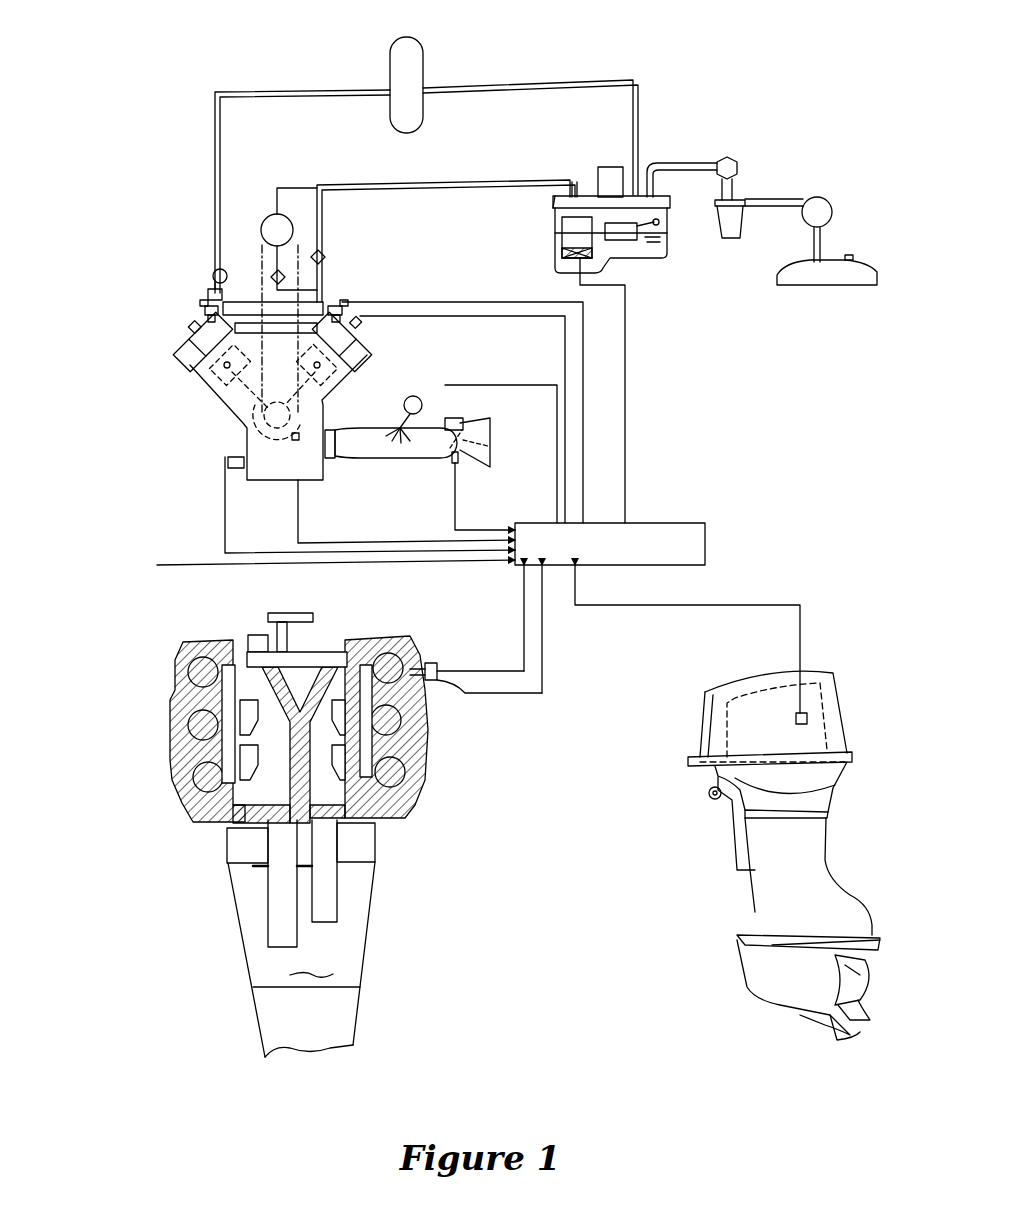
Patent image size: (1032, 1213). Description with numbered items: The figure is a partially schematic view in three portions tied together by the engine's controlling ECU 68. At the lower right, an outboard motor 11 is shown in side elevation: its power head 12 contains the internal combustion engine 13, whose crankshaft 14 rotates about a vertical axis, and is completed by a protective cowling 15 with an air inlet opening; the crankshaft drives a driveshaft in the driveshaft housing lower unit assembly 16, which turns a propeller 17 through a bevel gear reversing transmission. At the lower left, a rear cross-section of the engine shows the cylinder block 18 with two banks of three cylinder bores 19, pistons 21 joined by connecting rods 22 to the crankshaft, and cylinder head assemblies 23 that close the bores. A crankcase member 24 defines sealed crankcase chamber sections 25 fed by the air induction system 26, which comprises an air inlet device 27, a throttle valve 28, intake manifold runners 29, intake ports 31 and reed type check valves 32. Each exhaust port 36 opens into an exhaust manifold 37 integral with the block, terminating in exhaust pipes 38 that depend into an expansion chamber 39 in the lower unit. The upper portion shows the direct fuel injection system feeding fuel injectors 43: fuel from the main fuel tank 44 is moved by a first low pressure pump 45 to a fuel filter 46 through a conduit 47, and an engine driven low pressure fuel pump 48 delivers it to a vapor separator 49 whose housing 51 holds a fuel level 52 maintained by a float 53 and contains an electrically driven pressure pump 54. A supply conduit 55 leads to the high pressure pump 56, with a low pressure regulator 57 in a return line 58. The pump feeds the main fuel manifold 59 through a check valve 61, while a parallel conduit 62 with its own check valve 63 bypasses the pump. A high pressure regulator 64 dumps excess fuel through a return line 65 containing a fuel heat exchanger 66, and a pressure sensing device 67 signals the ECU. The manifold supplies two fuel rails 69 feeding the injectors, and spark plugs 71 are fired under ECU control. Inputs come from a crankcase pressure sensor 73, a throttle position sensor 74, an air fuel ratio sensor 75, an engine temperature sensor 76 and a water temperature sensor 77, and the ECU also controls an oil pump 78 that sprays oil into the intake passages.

The outboard motor 11 is at (860, 685).
The power head 12 is at (850, 750).
The internal combustion engine 13 is at (128, 405).
The crankshaft 14 is at (243, 440).
The protective cowling 15 is at (715, 695).
The driveshaft housing lower unit assembly 16 is at (367, 933).
The propeller 17 is at (862, 1005).
The cylinder block 18 is at (338, 390).
The cylinder bores 19 is at (202, 383).
The pistons 21 is at (187, 370).
The connecting rods 22 is at (227, 403).
The cylinder head assemblies 23 is at (193, 340).
The crankcase member 24 is at (272, 482).
The crankcase chamber sections 25 is at (265, 460).
The air induction system 26 is at (445, 410).
The air inlet device 27 is at (466, 424).
The throttle valve 28 is at (490, 460).
The intake manifold runners 29 is at (402, 458).
The intake ports 31 is at (328, 462).
The reed type check valves 32 is at (342, 462).
The exhaust port 36 is at (245, 817).
The exhaust manifolds 37 is at (278, 820).
The exhaust pipes 38 is at (320, 870).
The expansion chamber 39 is at (311, 963).
The fuel injectors 43 is at (200, 312).
The main fuel tank 44 is at (808, 278).
The first low pressure pump 45 is at (828, 202).
The fuel filter 46 is at (732, 238).
The conduit 47 is at (738, 160).
The low pressure fuel pump 48 is at (770, 198).
The vapor separator 49 is at (652, 158).
The vapor separator housing 51 is at (548, 213).
The fuel level 52 is at (640, 258).
The float 53 is at (630, 228).
The electrically driven pressure pump 54 is at (573, 223).
The supply conduit 55 is at (370, 183).
The high pressure pump 56 is at (268, 218).
The low pressure regulator 57 is at (608, 167).
The return line 58 is at (587, 173).
The main fuel manifold 59 is at (318, 300).
The check valve 61 is at (270, 272).
The parallel conduit 62 is at (322, 222).
The check valve 63 is at (325, 256).
The high pressure regulator 64 is at (213, 268).
The return line 65 is at (312, 90).
The fuel heat exchanger 66 is at (412, 62).
The pressure sensing device 67 is at (205, 288).
The ECU 68 is at (672, 523).
The fuel rails 69 is at (205, 303).
The spark plugs 71 is at (185, 330).
The crankcase pressure sensor 73 is at (227, 457).
The throttle position sensor 74 is at (460, 463).
The air fuel ratio sensor 75 is at (460, 685).
The engine temperature sensor 76 is at (422, 710).
The water temperature sensor 77 is at (808, 718).
The oil pump 78 is at (299, 440).